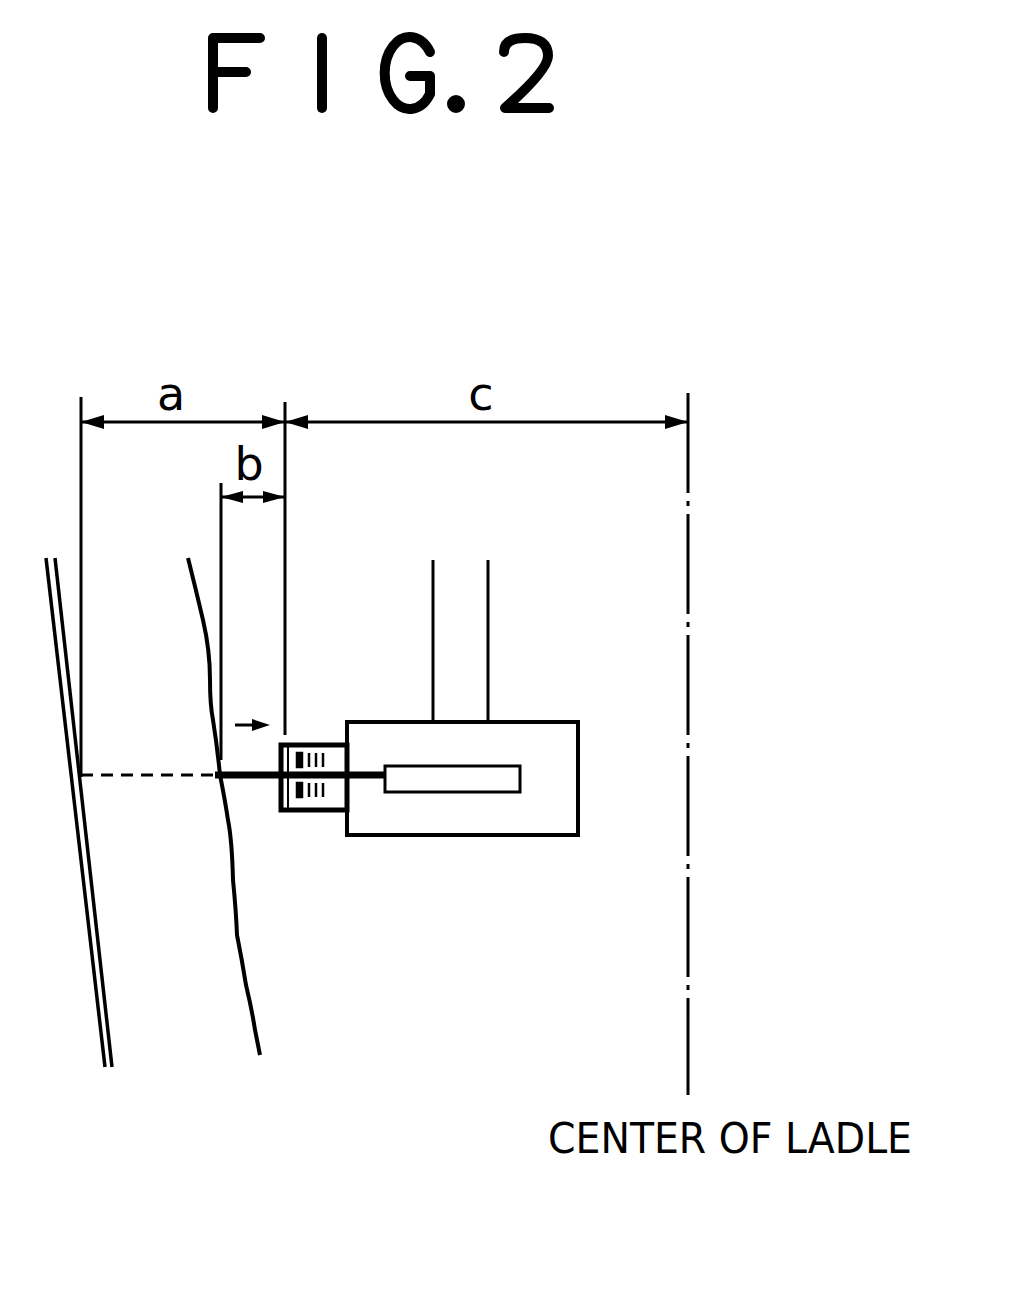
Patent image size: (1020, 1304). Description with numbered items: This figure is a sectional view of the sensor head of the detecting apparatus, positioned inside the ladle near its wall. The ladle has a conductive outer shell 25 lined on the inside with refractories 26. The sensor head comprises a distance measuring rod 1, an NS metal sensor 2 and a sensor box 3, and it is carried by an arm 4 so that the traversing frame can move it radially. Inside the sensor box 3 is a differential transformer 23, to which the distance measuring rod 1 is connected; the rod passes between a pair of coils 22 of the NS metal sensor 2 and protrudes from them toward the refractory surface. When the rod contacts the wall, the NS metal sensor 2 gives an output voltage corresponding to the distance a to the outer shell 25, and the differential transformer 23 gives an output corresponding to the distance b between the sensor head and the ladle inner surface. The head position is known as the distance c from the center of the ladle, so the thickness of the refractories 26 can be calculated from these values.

The distance measuring rod 1 is at (243, 780).
The NS metal sensor 2 is at (315, 742).
The sensor box 3 is at (483, 835).
The arm 4 is at (453, 617).
The coils 22 is at (300, 797).
The differential transformer 23 is at (500, 773).
The outer shell 25 is at (97, 1045).
The refractories 26 is at (223, 1043).